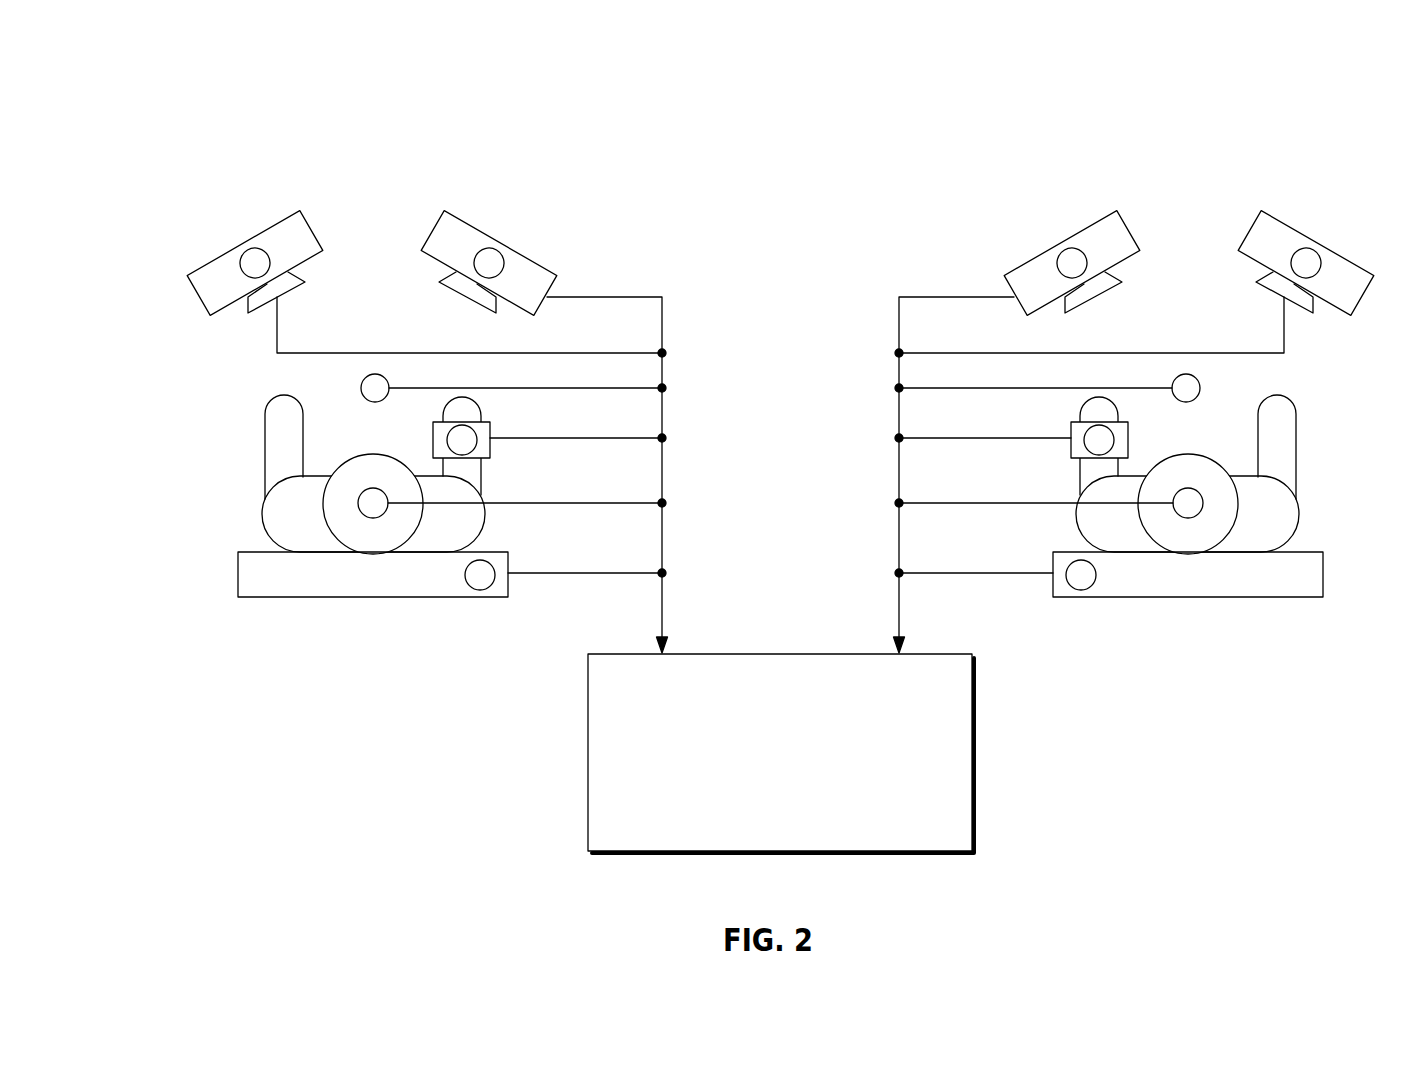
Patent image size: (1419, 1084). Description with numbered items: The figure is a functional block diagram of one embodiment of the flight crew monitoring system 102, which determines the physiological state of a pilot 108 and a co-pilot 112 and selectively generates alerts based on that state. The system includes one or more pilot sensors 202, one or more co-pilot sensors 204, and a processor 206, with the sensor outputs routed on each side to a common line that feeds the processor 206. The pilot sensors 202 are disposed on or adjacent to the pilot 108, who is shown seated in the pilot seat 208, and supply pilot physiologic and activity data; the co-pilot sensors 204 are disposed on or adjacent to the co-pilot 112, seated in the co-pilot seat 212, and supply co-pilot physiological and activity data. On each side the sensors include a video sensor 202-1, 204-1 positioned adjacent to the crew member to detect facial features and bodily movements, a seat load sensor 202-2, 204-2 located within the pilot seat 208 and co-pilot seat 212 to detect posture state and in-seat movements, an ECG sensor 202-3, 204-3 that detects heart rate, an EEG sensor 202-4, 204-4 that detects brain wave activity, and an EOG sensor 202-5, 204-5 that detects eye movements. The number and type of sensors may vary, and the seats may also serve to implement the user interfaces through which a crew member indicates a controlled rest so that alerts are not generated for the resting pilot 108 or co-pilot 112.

The flight crew monitoring system 102 is at (1262, 82).
The pilot sensors 202 is at (212, 185).
The co-pilot sensors 204 is at (963, 185).
The video sensor 202-1 is at (246, 243).
The seat load sensor 202-2 is at (480, 590).
The electrocardiogram (ECG) sensor 202-3 is at (492, 432).
The electroencephalogram (EEG) sensor 202-4 is at (371, 488).
The electrooculogram (EOG) sensor 202-5 is at (374, 373).
The video sensor 204-1 is at (1062, 243).
The seat load sensor 204-2 is at (1081, 590).
The electrocardiogram (ECG) sensor 204-3 is at (1069, 432).
The electroencephalogram (EEG) sensor 204-4 is at (1190, 488).
The electrooculogram (EOG) sensor 204-5 is at (1187, 373).
The pilot 108 is at (265, 440).
The co-pilot 112 is at (1297, 440).
The pilot seat 208 is at (238, 574).
The co-pilot seat 212 is at (1323, 573).
The processor 206 is at (645, 654).